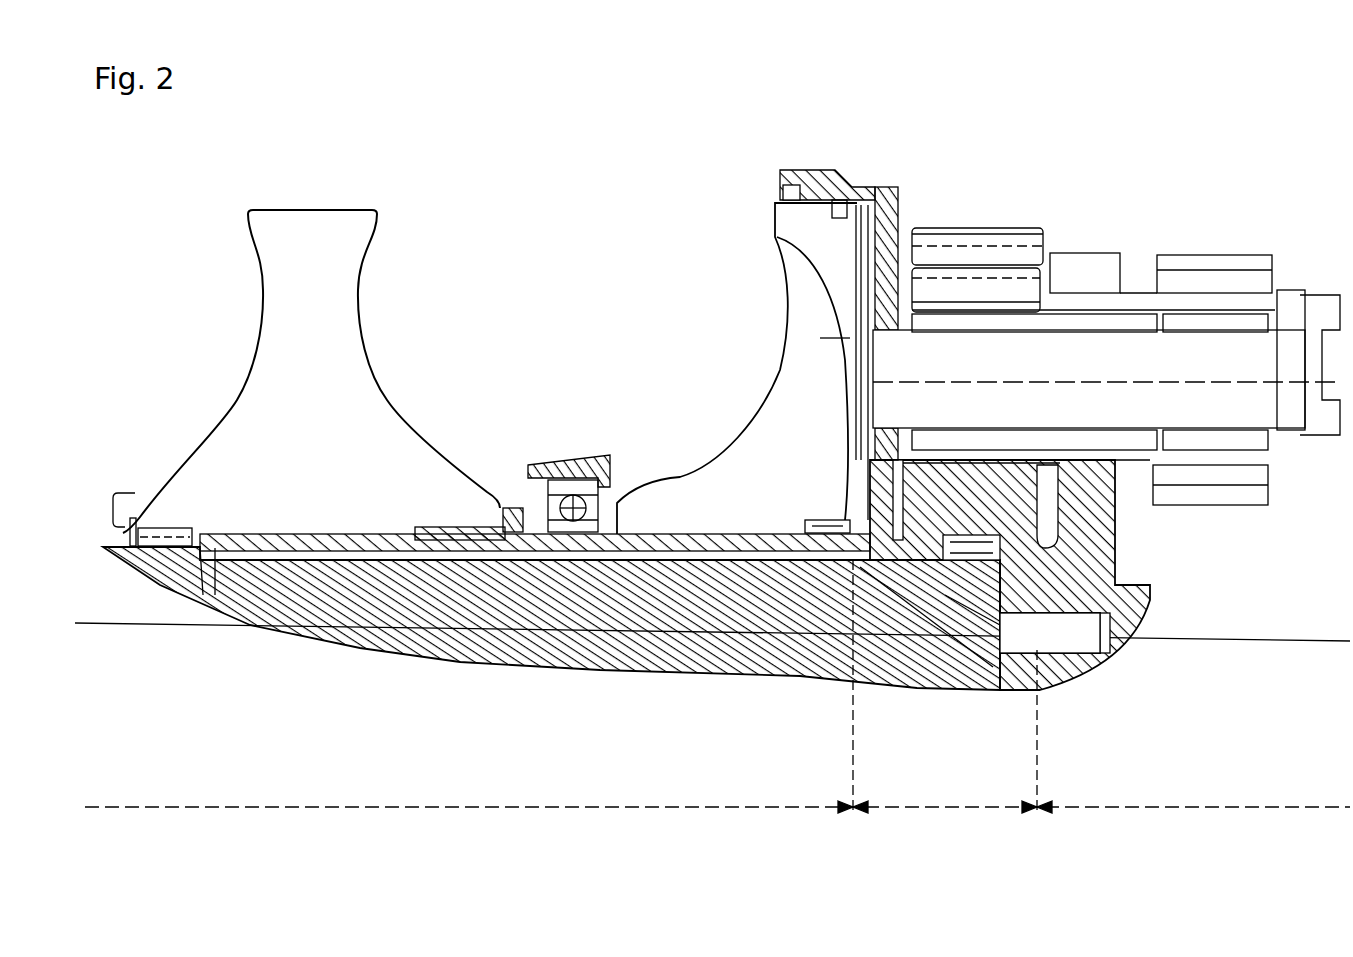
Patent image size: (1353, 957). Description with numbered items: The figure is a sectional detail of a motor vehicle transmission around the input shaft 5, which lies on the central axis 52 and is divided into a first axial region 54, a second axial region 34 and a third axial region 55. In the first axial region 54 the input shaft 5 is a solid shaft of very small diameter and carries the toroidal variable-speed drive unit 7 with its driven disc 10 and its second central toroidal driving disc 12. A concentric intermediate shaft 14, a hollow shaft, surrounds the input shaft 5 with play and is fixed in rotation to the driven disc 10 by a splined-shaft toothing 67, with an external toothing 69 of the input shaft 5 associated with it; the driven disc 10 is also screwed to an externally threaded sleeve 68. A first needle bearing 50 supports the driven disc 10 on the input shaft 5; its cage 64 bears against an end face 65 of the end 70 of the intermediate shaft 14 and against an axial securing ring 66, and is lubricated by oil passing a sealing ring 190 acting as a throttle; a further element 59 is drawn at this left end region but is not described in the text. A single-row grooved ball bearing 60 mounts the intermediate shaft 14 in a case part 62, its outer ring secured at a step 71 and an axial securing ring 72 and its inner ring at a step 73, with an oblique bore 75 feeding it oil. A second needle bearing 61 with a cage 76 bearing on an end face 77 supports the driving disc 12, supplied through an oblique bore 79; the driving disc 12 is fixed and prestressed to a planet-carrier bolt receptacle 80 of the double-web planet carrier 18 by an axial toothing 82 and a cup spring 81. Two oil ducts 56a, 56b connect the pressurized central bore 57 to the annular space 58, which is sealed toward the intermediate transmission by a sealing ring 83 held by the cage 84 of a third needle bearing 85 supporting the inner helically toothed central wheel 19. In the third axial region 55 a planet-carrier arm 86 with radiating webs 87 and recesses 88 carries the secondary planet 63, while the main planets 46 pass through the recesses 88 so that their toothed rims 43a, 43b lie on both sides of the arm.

The input shaft 5 is at (413, 594).
The toroidal variable-speed drive unit 7 is at (560, 190).
The driven disc 10 is at (302, 379).
The second central toroidal driving disc 12 is at (760, 496).
The concentric intermediate shaft 14 is at (557, 547).
The double-web planet carrier 18 is at (1084, 220).
The inner helically toothed central wheel 19 is at (962, 522).
The second axial region 34 is at (937, 793).
The toothed rim 43a is at (957, 282).
The toothed rim 43b is at (1218, 262).
The main planet 46 is at (1136, 272).
The first needle bearing 50 is at (136, 505).
The central axis 52 is at (1182, 642).
The first axial region 54 is at (717, 687).
The third axial region 55 is at (1129, 793).
The oil duct 56a is at (868, 570).
The oil duct 56b is at (1032, 690).
The central bore 57 is at (1074, 649).
The annular space 58 is at (665, 558).
The pin 59 is at (180, 528).
The single-row grooved ball bearing 60 is at (527, 495).
The second needle bearing 61 is at (815, 497).
The case part 62 is at (585, 453).
The secondary planet 63 is at (1019, 259).
The cage 64 is at (155, 528).
The end face 65 is at (135, 548).
The axial securing ring 66 is at (130, 538).
The splined-shaft toothing 67 is at (320, 535).
The externally threaded sleeve 68 is at (518, 507).
The external toothing 69 is at (420, 527).
The end of the intermediate shaft 70 is at (220, 512).
The step 71 is at (610, 465).
The axial securing ring 72 is at (548, 478).
The step 73 is at (600, 550).
The oblique bore 75 is at (620, 550).
The cage 76 is at (845, 520).
The end face 77 is at (832, 560).
The oblique bore 79 is at (777, 550).
The planet-carrier bolt receptacle 80 is at (888, 323).
The cup spring 81 is at (890, 185).
The axial toothing 82 is at (774, 183).
The sealing ring 83 is at (773, 237).
The cage 84 is at (1110, 607).
The third needle bearing 85 is at (988, 508).
The planet-carrier arm 86 is at (1127, 524).
The web 87 is at (1082, 279).
The recess 88 is at (1125, 468).
The sealing ring 190 is at (204, 597).